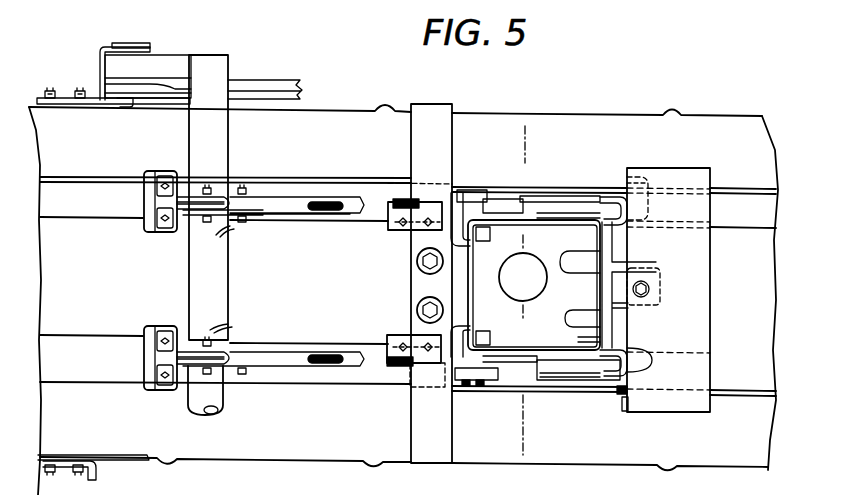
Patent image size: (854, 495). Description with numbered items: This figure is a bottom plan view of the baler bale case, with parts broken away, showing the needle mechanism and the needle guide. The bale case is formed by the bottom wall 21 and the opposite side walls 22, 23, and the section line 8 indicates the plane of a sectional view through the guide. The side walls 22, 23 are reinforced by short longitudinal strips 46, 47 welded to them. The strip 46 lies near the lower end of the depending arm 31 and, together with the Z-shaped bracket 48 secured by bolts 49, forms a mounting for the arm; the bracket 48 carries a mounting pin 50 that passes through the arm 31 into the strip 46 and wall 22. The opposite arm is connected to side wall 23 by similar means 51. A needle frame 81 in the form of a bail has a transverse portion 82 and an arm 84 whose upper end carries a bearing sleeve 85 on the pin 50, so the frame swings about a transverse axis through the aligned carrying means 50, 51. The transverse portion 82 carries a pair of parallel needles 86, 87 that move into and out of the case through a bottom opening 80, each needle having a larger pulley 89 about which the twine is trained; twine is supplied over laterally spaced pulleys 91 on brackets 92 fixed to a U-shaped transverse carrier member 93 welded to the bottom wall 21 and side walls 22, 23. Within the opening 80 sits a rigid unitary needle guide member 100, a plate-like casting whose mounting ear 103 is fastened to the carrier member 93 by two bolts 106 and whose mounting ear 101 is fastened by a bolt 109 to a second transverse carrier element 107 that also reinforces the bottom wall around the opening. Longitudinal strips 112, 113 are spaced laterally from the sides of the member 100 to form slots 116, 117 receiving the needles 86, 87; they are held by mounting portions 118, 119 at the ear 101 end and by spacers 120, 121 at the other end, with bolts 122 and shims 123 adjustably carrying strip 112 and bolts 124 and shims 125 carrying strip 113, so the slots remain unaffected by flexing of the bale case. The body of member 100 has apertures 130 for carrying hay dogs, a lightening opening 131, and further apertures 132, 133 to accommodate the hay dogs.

The section line 8- 8 is at (500, 135).
The bottom wall 21 is at (50, 314).
The side wall 22 is at (352, 111).
The side wall 23 is at (256, 460).
The depending arm 31 is at (284, 93).
The reinforcing strip 46 is at (68, 105).
The reinforcing strip 47 is at (66, 456).
The bracket 48 is at (150, 44).
The bolts 49 is at (80, 90).
The mounting pin 50 is at (122, 105).
The bracket and pivot means 51 is at (86, 478).
The bottom opening 80 is at (538, 194).
The needle frame 81 is at (246, 63).
The transverse portion 82 is at (226, 143).
The needle frame arm 84 is at (172, 66).
The bearing sleeve 85 is at (148, 53).
The needle 86 is at (298, 205).
The needle 87 is at (282, 370).
The larger pulley 89 is at (330, 211).
The pulleys 91 is at (398, 220).
The brackets 92 is at (398, 345).
The transverse carrier member 93 is at (411, 143).
The needle guide member 100 is at (528, 342).
The mounting ear 101 is at (618, 266).
The mounting ear 103 is at (424, 272).
The bolts 106 is at (430, 302).
The second transverse carrier element 107 is at (700, 308).
The bolt 109 is at (650, 289).
The longitudinal strip 112 is at (485, 192).
The longitudinal strip 113 is at (498, 381).
The longitudinal slot 116 is at (556, 196).
The longitudinal slot 117 is at (578, 371).
The mounting portion 118 is at (650, 228).
The mounting portion 119 is at (645, 360).
The spacer 120 is at (495, 214).
The spacer 121 is at (458, 364).
The bolts 122 is at (658, 180).
The shims 123 is at (650, 207).
The bolts 124 is at (480, 388).
The shims 125 is at (462, 376).
The apertures 130 is at (590, 222).
The opening 131 is at (503, 294).
The aperture 132 is at (484, 240).
The aperture 133 is at (563, 256).